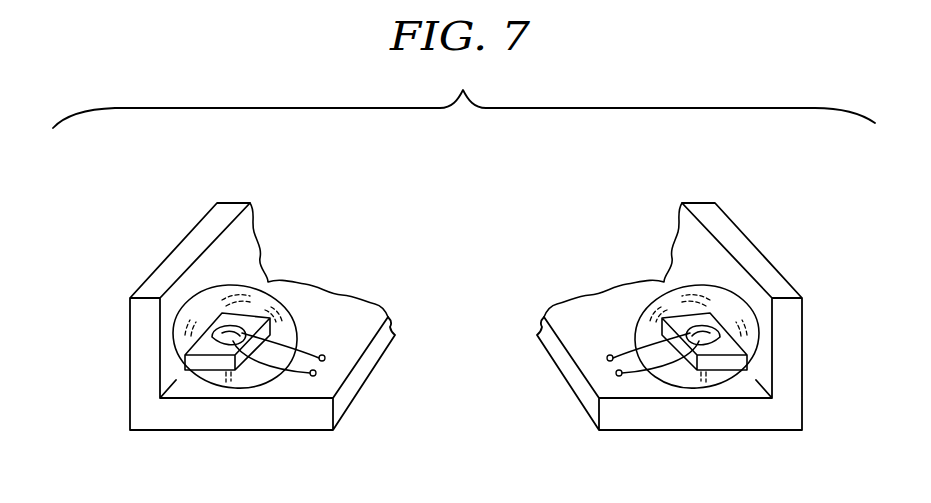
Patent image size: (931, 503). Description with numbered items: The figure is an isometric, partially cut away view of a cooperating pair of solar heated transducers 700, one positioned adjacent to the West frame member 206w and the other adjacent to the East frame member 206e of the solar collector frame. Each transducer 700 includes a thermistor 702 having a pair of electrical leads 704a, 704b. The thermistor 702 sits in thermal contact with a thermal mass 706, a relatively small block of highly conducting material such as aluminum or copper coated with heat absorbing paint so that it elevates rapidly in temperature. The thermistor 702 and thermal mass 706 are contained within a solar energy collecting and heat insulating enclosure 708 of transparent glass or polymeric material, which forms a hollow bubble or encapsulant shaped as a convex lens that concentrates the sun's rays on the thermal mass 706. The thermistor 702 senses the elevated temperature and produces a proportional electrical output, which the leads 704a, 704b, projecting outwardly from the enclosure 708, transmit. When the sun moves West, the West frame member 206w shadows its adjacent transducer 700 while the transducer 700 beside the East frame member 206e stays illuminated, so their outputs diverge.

The West frame member 206w is at (130, 302).
The East frame member 206e is at (802, 302).
The solar heated transducer 700 is at (256, 283).
The thermistor 702 is at (213, 333).
The electrical lead 704a is at (310, 358).
The electrical lead 704b is at (283, 372).
The thermal mass 706 is at (207, 367).
The solar energy collecting and heat insulating enclosure 708 is at (207, 298).